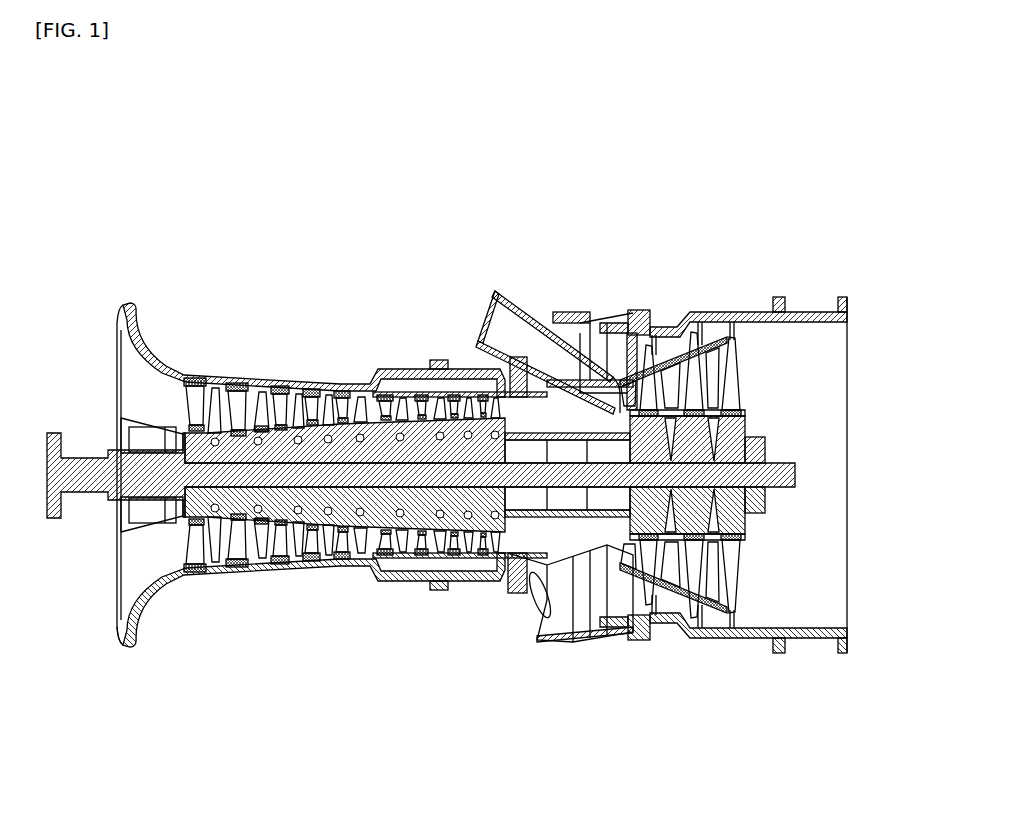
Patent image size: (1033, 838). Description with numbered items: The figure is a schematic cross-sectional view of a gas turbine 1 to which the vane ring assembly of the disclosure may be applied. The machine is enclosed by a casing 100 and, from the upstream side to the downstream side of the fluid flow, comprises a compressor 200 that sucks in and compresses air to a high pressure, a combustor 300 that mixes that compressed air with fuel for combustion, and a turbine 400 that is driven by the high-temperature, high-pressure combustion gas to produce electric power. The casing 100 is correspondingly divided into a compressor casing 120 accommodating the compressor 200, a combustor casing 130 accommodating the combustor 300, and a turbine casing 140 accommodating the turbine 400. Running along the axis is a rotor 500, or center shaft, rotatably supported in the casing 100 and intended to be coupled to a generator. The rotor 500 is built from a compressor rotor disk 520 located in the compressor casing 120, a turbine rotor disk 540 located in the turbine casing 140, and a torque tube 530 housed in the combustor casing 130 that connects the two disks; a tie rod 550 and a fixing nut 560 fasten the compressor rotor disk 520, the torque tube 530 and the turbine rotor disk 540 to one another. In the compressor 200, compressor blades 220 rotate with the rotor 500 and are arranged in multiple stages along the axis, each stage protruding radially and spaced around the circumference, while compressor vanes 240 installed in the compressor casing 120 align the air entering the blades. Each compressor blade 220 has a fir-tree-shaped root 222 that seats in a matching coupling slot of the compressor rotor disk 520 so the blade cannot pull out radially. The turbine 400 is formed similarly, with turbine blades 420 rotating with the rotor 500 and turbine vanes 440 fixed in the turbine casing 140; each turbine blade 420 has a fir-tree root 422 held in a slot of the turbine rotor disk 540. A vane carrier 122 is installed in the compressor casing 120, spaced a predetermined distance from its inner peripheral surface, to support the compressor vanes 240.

The gas turbine 1 is at (123, 105).
The casing 100 is at (437, 197).
The compressor casing 120 is at (365, 390).
The vane carrier 122 is at (487, 380).
The combustor casing 130 is at (553, 312).
The turbine casing 140 is at (670, 325).
The compressor 200 is at (250, 300).
The compressor blade 220 is at (267, 402).
The root 222 is at (267, 423).
The compressor vane 240 is at (240, 400).
The combustor 300 is at (496, 293).
The turbine 400 is at (767, 248).
The turbine blade 420 is at (728, 370).
The root 422 is at (743, 414).
The turbine vane 440 is at (710, 367).
The rotor 500 is at (382, 705).
The compressor rotor disk 520 is at (367, 573).
The torque tube 530 is at (568, 500).
The turbine rotor disk 540 is at (693, 500).
The tie rod 550 is at (453, 593).
The fixing nut 560 is at (757, 497).